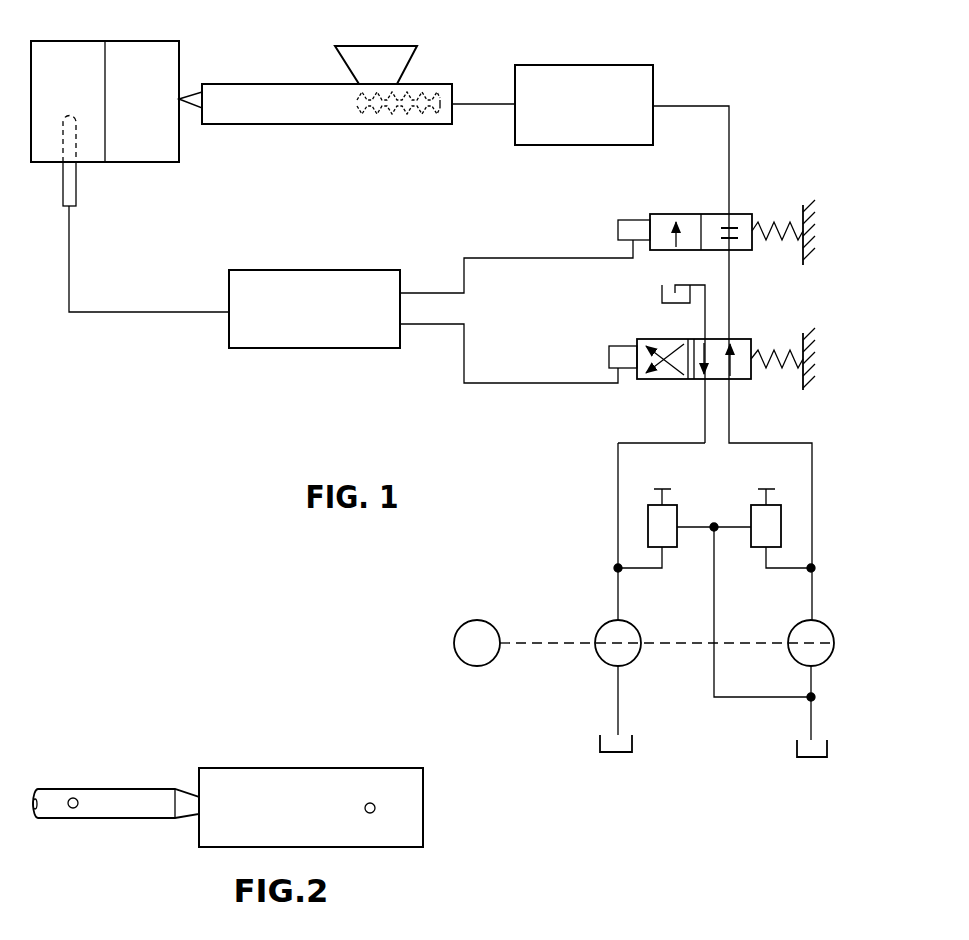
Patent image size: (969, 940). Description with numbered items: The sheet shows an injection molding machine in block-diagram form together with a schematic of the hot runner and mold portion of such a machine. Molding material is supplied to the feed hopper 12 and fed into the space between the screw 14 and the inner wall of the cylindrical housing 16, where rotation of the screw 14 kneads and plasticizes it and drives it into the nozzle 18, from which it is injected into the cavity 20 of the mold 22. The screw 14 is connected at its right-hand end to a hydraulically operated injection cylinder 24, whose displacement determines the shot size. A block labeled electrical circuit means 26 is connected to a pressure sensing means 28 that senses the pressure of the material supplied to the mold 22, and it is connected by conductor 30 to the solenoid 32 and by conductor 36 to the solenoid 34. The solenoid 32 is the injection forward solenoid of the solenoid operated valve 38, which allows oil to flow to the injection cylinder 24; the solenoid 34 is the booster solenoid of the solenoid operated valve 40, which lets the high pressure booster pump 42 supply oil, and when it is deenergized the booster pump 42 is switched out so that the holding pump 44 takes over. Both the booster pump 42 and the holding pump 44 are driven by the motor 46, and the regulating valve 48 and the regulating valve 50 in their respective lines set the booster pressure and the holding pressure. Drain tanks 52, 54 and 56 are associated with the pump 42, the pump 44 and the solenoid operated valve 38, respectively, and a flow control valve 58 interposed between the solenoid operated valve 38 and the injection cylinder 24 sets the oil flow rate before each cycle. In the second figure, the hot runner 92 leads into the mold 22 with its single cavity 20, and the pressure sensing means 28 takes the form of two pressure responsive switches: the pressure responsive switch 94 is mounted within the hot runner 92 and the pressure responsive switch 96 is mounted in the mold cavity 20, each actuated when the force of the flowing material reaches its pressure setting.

In FIG. 1, the feed hopper 12 is at (385, 75).
In FIG. 1, the screw 14 is at (418, 92).
In FIG. 1, the cylindrical housing 16 is at (247, 84).
In FIG. 1, the nozzle 18 is at (192, 95).
In FIG. 2, the cavity 20 is at (275, 821).
In FIG. 1, the mold 22 is at (150, 40).
In FIG. 2, the mold 22 is at (329, 768).
In FIG. 1, the injection cylinder 24 is at (438, 110).
In FIG. 1, the electrical circuit means 26 is at (304, 351).
In FIG. 1, the pressure sensing means 28 is at (79, 185).
In FIG. 1, the conductor 30 is at (514, 258).
In FIG. 1, the solenoid 32 is at (637, 220).
In FIG. 1, the solenoid 34 is at (617, 346).
In FIG. 1, the conductor 36 is at (516, 383).
In FIG. 1, the solenoid operated valve 38 is at (771, 222).
In FIG. 1, the solenoid operated valve 40 is at (779, 351).
In FIG. 1, the booster pump 42 is at (602, 660).
In FIG. 1, the holding pump 44 is at (829, 659).
In FIG. 1, the motor 46 is at (470, 619).
In FIG. 1, the regulating valve 48 is at (672, 550).
In FIG. 1, the regulating valve 50 is at (753, 550).
In FIG. 1, the drain tank 52 is at (597, 738).
In FIG. 1, the drain tank 54 is at (792, 745).
In FIG. 1, the drain tank 56 is at (660, 295).
In FIG. 1, the flow control valve 58 is at (624, 65).
In FIG. 2, the hot runner 92 is at (153, 789).
In FIG. 2, the pressure responsive switch 94 is at (73, 798).
In FIG. 2, the pressure responsive switch 96 is at (372, 813).